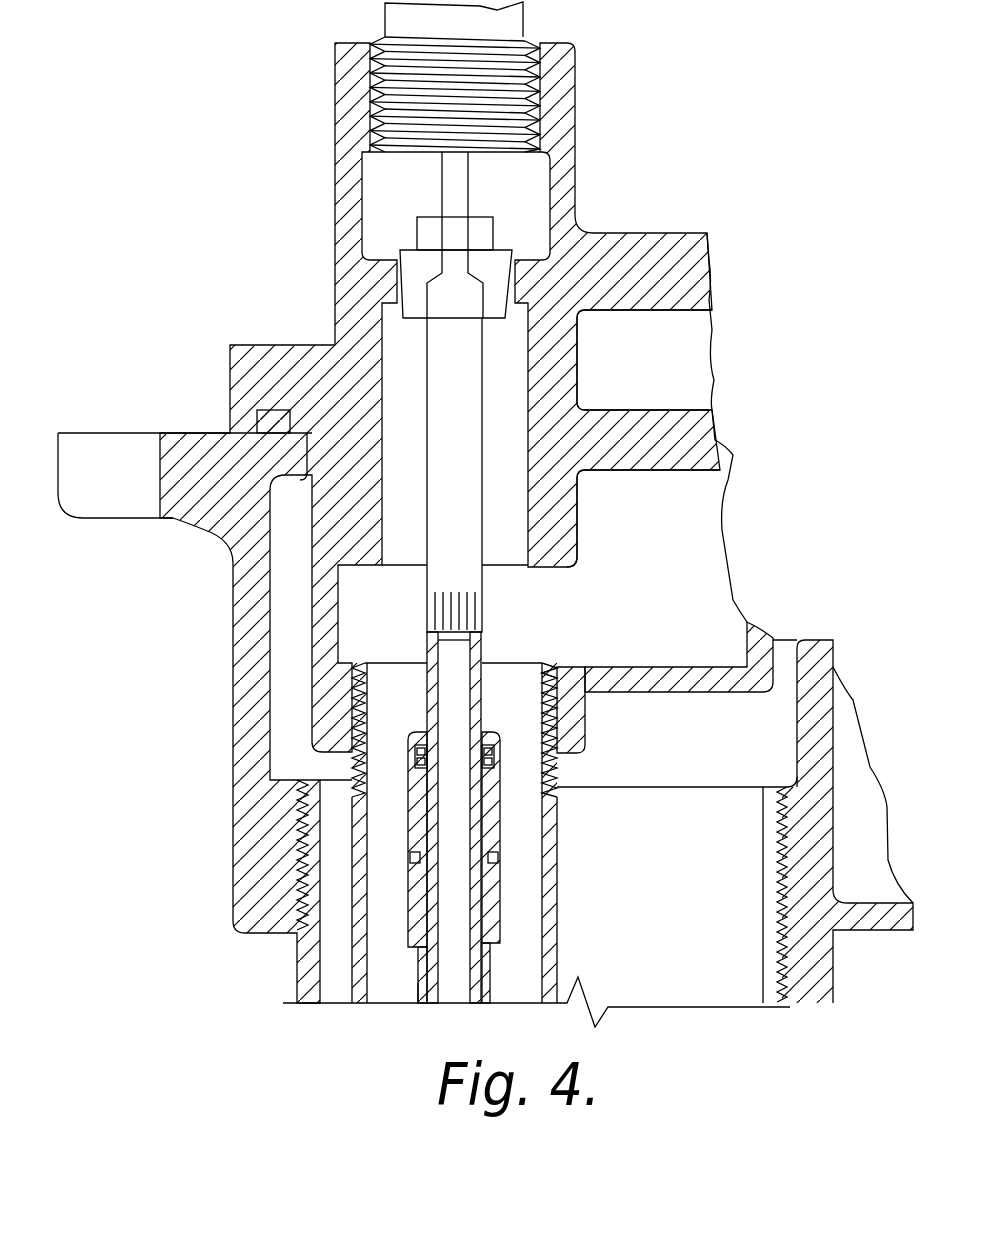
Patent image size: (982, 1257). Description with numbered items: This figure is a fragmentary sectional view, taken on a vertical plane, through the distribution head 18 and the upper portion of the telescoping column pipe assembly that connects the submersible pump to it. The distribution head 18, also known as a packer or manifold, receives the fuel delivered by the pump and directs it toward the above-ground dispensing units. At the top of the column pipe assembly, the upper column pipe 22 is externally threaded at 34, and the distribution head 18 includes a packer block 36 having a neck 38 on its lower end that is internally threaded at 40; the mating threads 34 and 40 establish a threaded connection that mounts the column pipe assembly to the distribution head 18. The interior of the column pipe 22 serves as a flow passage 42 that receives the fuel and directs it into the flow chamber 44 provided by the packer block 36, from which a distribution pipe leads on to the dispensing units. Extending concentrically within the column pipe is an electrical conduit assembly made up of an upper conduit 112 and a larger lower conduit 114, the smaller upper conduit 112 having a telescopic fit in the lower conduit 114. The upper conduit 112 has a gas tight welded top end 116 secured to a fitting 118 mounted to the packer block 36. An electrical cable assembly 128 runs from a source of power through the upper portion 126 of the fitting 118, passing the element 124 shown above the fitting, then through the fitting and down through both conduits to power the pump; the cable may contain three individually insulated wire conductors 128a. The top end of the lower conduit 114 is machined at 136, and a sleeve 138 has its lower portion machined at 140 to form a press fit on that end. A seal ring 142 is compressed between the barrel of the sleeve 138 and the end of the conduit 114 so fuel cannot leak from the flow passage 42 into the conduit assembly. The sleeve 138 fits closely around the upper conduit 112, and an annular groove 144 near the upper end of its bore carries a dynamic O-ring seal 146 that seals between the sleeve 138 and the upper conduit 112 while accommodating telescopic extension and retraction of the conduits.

The distribution head 18 is at (258, 265).
The upper column pipe 22 is at (552, 860).
The external threads 34 is at (560, 778).
The packer block 36 is at (698, 683).
The neck 38 is at (575, 717).
The internal threads 40 is at (538, 672).
The flow passage 42 is at (537, 984).
The flow chamber 44 is at (657, 536).
The upper conduit 112 is at (480, 605).
The lower conduit 114 is at (413, 983).
The welded top end 116 is at (463, 320).
The fitting 118 is at (527, 262).
The rod 124 is at (458, 178).
The upper portion 126 is at (437, 227).
The electrical cable assembly 128 is at (483, 647).
The insulated electrical wire conductors 128a is at (460, 620).
The machined top end 136 is at (492, 905).
The sleeve 138 is at (495, 815).
The machined lower portion 140 is at (413, 900).
The seal ring 142 is at (412, 852).
The annular groove 144 is at (420, 757).
The dynamic O-ring seal 146 is at (488, 757).